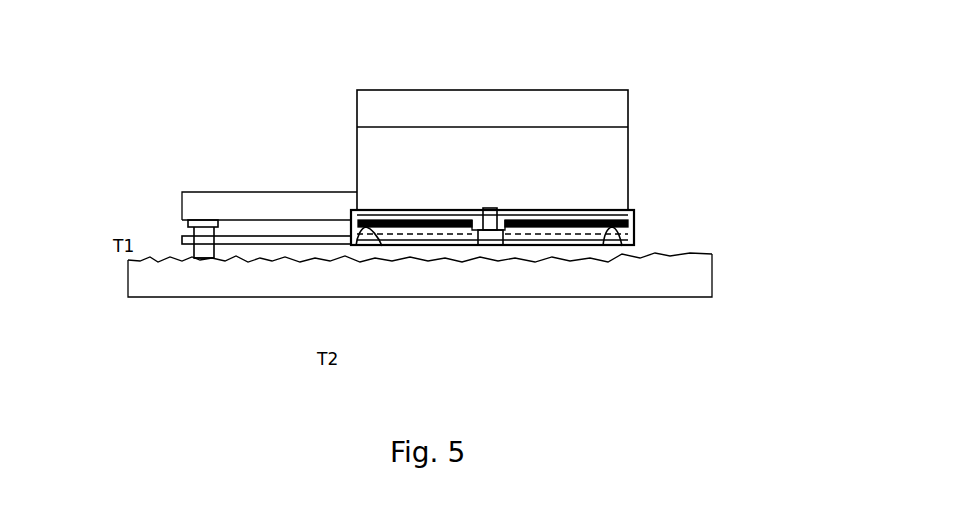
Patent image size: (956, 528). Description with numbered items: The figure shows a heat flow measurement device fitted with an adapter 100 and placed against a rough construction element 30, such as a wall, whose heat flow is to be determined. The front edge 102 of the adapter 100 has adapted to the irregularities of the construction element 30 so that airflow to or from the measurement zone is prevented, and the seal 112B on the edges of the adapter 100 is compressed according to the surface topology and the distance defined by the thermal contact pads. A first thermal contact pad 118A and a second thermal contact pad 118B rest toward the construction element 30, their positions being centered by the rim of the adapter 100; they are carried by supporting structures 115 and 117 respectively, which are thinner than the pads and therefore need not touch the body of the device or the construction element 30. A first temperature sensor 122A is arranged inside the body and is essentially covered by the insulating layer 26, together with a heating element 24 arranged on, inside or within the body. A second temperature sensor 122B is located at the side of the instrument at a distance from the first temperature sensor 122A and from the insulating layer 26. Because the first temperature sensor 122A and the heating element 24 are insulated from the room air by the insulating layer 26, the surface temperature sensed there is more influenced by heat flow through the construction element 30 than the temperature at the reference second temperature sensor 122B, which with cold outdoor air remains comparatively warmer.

The heating element 24 is at (393, 218).
The insulating layer 26 is at (613, 152).
The construction element 30 is at (145, 277).
The adapter 100 is at (636, 226).
The front edge 102 is at (628, 256).
The seal 112B is at (635, 252).
The supporting structure 115 is at (553, 238).
The supporting structure 117 is at (258, 250).
The first thermal contact pad 118A is at (483, 252).
The second thermal contact pad 118B is at (200, 252).
The first temperature sensor 122A is at (491, 207).
The second temperature sensor 122B is at (205, 220).